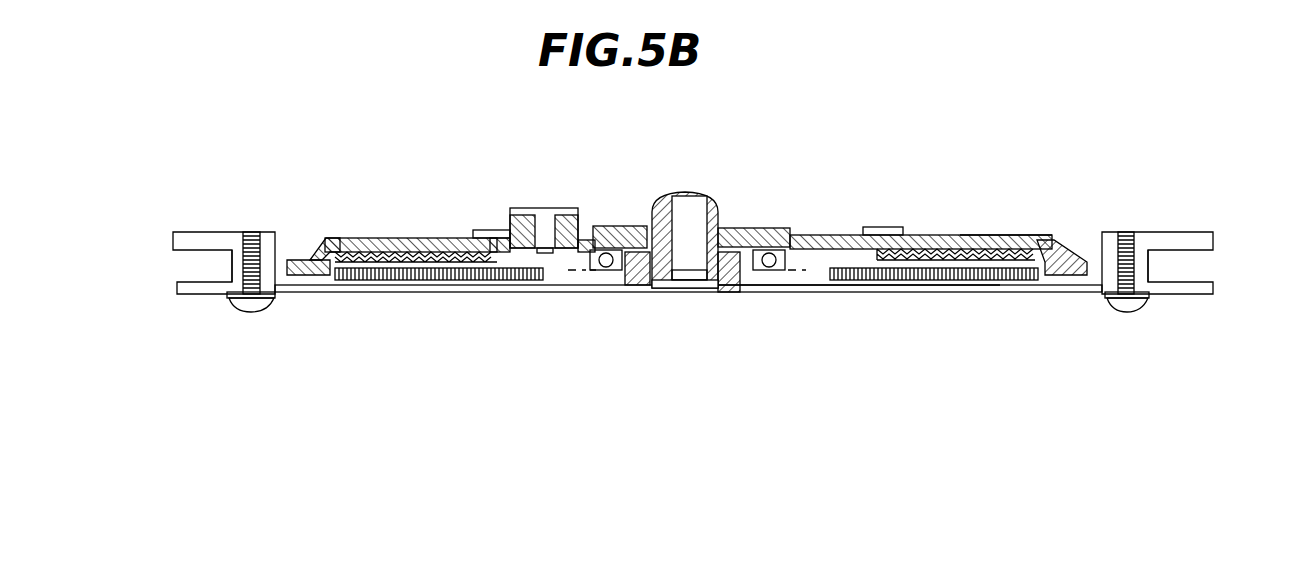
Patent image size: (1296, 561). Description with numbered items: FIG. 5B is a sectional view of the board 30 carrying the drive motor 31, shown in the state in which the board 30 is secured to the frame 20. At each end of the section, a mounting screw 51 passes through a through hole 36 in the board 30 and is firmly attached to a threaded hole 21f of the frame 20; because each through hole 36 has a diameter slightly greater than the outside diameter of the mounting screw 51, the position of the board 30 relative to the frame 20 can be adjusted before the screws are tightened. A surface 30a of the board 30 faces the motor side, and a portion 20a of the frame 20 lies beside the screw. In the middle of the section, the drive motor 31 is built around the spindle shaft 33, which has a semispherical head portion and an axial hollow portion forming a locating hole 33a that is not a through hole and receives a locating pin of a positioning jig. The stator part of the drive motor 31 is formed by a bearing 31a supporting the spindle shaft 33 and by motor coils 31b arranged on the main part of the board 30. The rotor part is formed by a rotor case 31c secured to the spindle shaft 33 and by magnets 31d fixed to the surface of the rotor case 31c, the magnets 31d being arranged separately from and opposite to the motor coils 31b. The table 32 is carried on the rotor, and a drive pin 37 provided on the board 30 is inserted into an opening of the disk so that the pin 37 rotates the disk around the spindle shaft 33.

The frame 20 is at (232, 232).
The bracket groove 20a is at (232, 266).
The threaded hole 21f is at (252, 232).
The board 30 is at (1078, 295).
The base plate surface 30a is at (875, 287).
The drive motor 31 is at (372, 236).
The bearing 31a is at (728, 292).
The motor coils 31b is at (455, 283).
The rotor case 31c is at (987, 235).
The magnets 31d is at (1035, 240).
The table 32 is at (880, 227).
The spindle shaft 33 is at (716, 206).
The locating hole 33a is at (684, 278).
The through holes 36 is at (268, 293).
The drive pin 37 is at (510, 215).
The mounting screws 51 is at (256, 306).